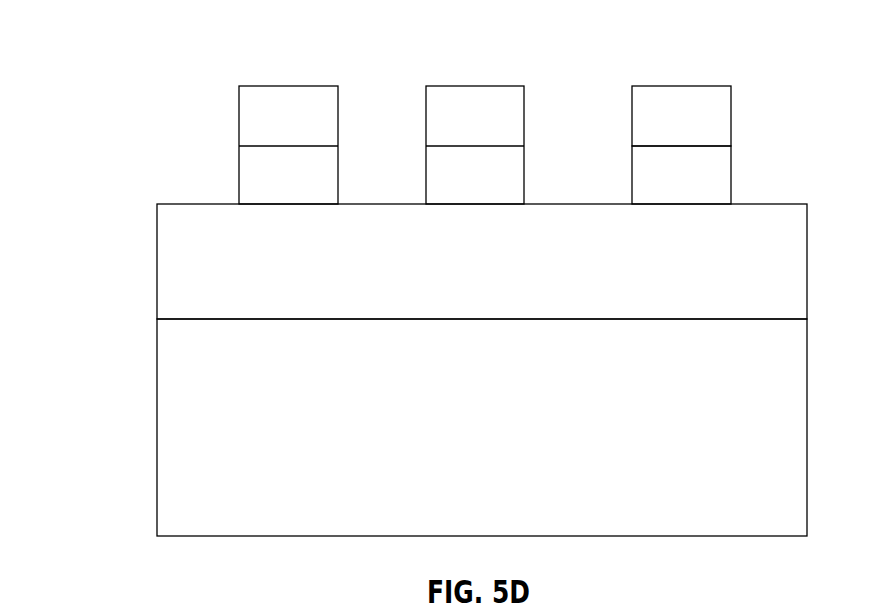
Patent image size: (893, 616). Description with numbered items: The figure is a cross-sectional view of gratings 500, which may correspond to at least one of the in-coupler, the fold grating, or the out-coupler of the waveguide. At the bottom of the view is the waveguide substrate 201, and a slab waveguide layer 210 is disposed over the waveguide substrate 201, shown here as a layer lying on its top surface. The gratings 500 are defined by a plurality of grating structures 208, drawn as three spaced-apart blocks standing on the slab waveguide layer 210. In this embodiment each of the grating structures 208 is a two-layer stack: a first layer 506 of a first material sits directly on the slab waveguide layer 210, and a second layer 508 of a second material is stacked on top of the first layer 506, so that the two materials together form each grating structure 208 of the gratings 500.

The gratings 500 is at (135, 63).
The grating structures 208 is at (297, 145).
The second layer 508 is at (715, 115).
The first layer 506 is at (715, 185).
The slab waveguide layer 210 is at (500, 276).
The waveguide substrate 201 is at (508, 429).